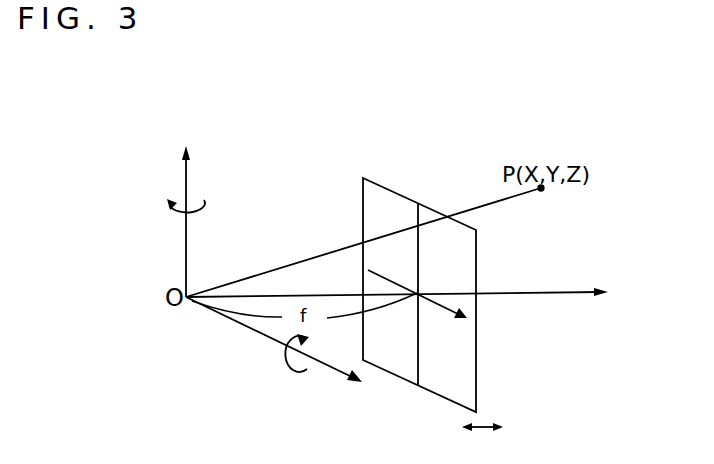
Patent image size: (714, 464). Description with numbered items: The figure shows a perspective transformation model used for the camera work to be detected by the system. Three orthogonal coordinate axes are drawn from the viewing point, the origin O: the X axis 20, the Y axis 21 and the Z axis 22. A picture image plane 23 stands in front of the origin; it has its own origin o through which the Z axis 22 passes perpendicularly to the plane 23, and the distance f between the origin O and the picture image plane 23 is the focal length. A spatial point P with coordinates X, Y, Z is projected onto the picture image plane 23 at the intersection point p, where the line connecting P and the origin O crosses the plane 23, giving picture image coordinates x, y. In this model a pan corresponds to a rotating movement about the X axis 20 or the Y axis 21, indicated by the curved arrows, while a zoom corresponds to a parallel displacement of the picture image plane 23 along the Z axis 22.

The X axis 20 is at (321, 367).
The Y axis 21 is at (188, 166).
The Z axis 22 is at (577, 294).
The picture image plane 23 is at (364, 178).